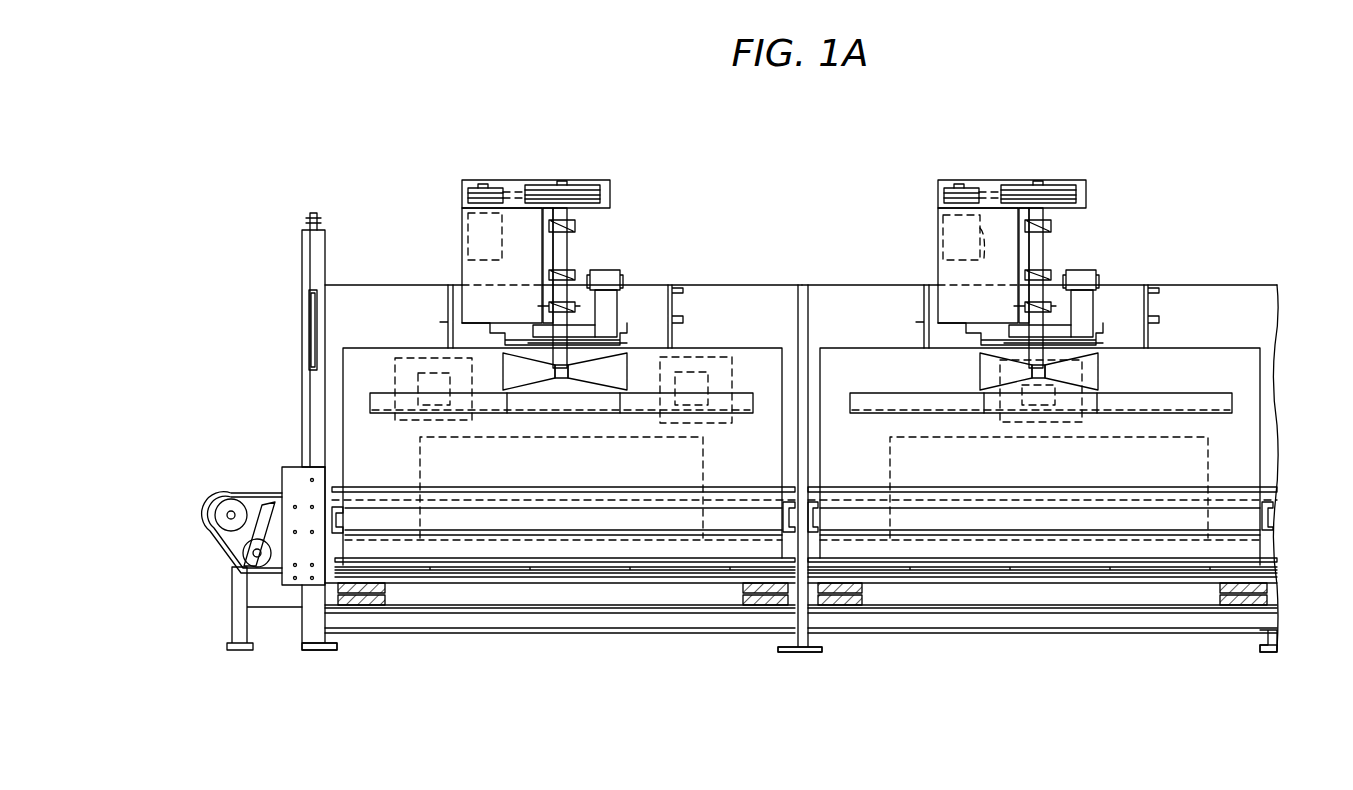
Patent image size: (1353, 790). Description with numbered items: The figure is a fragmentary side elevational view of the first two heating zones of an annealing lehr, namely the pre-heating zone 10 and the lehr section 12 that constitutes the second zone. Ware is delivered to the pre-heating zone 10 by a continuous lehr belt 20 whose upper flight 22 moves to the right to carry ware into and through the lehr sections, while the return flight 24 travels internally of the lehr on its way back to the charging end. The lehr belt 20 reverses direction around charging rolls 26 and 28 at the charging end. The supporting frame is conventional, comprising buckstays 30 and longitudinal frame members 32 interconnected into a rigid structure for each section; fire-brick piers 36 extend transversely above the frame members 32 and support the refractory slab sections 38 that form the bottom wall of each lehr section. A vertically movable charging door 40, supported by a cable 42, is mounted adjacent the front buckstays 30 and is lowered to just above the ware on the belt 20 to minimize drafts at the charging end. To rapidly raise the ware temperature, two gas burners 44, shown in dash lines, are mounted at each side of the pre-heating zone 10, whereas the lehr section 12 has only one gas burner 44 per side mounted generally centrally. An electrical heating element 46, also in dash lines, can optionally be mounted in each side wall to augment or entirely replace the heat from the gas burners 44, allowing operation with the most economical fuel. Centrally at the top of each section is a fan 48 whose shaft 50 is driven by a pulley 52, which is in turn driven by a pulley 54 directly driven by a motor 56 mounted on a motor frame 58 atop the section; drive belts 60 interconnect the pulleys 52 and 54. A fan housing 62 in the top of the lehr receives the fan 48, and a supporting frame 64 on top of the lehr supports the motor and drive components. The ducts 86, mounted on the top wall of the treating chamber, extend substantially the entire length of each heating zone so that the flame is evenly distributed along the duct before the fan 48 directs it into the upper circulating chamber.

The pre-heating zone 10 is at (734, 277).
The lehr section 12 is at (1156, 279).
The lehr belt 20 is at (239, 484).
The upper flight 22 is at (262, 500).
The return flight 24 is at (270, 575).
The charging roll 26 is at (222, 523).
The charging roll 28 is at (252, 560).
The buckstays 30 is at (332, 647).
The longitudinal frame members 32 is at (590, 612).
The fire-brick piers 36 is at (380, 600).
The refractory slab sections 38 is at (484, 585).
The charging door 40 is at (312, 325).
The cable 42 is at (320, 262).
The gas burner 44 is at (418, 358).
The electrical heating element 46 is at (716, 466).
The fan 48 is at (585, 380).
The shaft 50 is at (567, 253).
The pulley 52 is at (610, 200).
The pulley 54 is at (468, 195).
The motor 56 is at (513, 185).
The motor frame 58 is at (460, 258).
The drive belts 60 is at (522, 195).
The fan housing 62 is at (615, 325).
The supporting frame 64 is at (668, 290).
The duct 86 is at (745, 400).